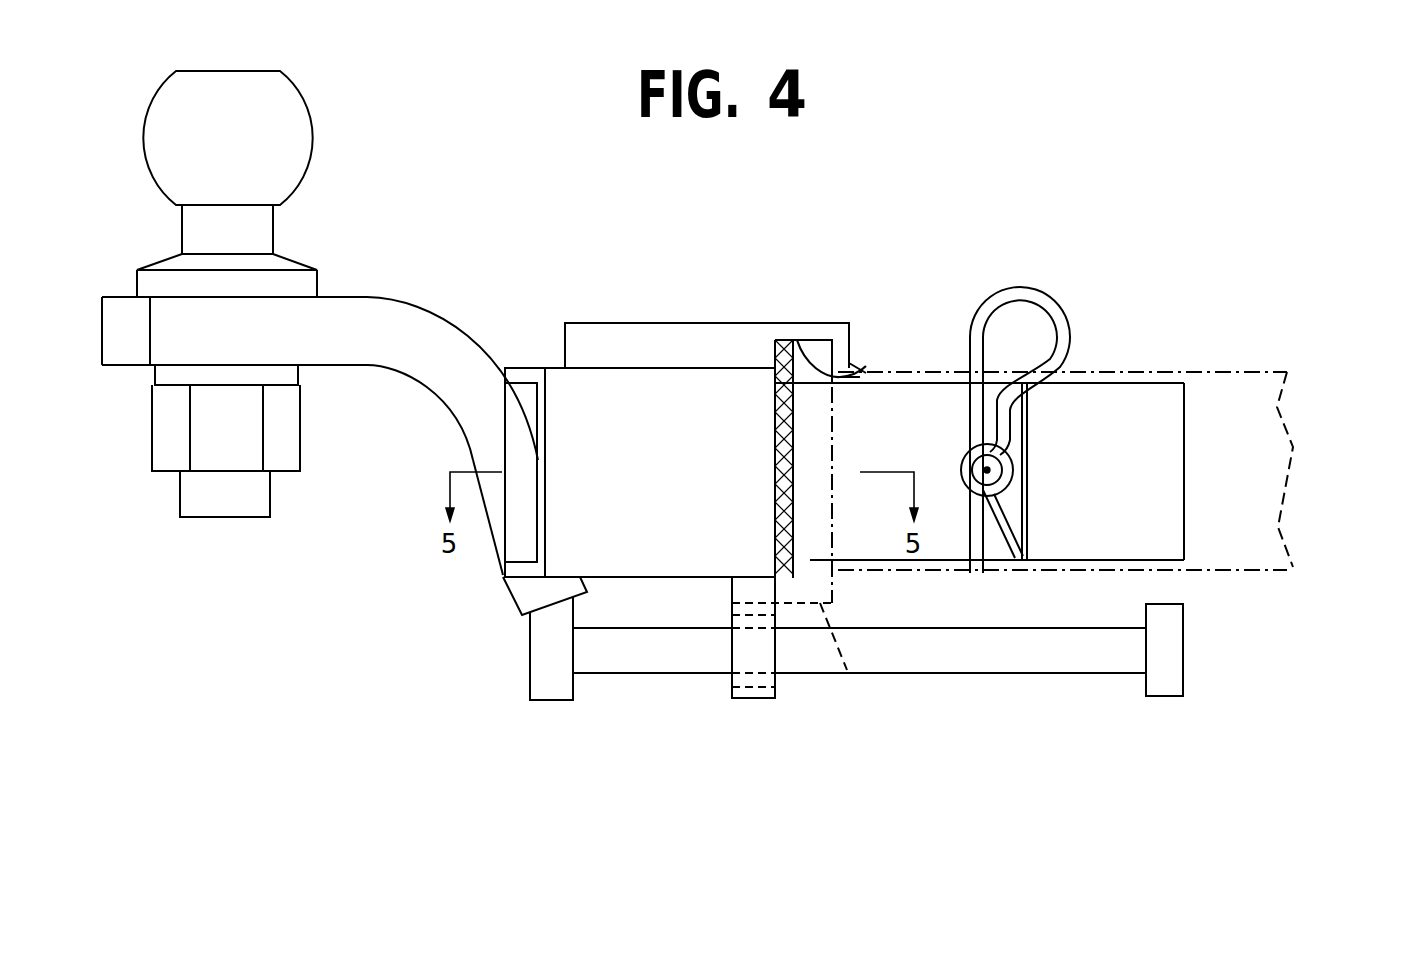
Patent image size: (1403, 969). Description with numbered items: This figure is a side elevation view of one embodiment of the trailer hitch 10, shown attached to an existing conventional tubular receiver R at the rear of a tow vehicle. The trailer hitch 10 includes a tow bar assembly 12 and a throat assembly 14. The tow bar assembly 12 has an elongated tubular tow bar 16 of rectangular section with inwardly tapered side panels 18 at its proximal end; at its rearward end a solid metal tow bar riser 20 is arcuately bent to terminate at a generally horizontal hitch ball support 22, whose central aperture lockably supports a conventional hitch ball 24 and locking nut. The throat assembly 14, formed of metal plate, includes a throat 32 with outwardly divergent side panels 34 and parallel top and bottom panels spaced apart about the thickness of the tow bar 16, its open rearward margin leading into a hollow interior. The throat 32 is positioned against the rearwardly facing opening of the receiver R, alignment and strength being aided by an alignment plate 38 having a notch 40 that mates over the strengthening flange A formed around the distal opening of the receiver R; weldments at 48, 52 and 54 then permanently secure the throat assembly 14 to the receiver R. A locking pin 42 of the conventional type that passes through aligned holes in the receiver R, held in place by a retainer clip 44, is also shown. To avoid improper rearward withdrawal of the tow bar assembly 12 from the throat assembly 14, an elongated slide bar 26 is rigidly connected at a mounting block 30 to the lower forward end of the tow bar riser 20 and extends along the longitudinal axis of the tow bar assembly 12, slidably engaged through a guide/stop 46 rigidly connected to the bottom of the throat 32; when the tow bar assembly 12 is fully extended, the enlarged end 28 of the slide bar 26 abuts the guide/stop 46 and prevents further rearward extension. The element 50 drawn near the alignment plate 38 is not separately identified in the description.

The trailer hitch 10 is at (865, 225).
The tow bar assembly 12 is at (420, 312).
The throat assembly 14 is at (665, 320).
The tow bar 16 is at (1113, 385).
The tapered side panels 18 is at (1117, 512).
The tow bar riser 20 is at (493, 545).
The hitch ball support 22 is at (341, 296).
The hitch ball 24 is at (311, 140).
The slide bar 26 is at (1027, 674).
The enlarged end 28 is at (1163, 697).
The mounting block 30 is at (552, 700).
The throat 32 is at (605, 362).
The side panels 34 is at (677, 500).
The alignment plate 38 is at (585, 322).
The notch 40 is at (868, 366).
The locking pin 42 is at (988, 478).
The retainer clip 44 is at (1035, 290).
The guide/stop 46 is at (750, 700).
The weldment 48 is at (790, 520).
The retainer wire 50 is at (797, 340).
The weldment 52 is at (862, 360).
The weldment 54 is at (773, 582).
The strengthening flange A is at (857, 683).
The receiver R is at (1225, 365).